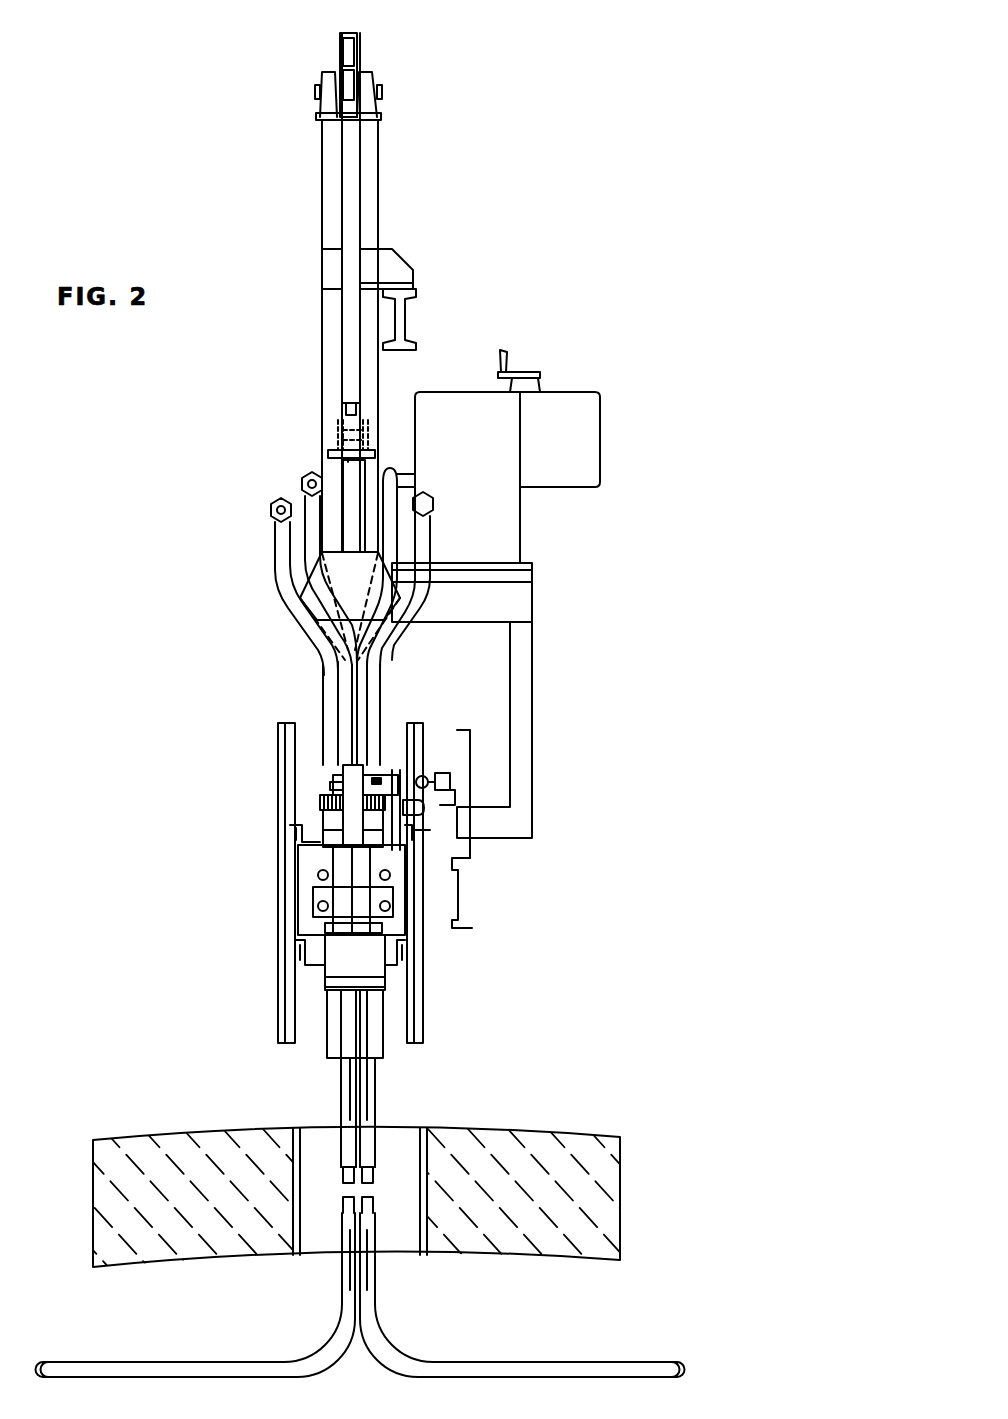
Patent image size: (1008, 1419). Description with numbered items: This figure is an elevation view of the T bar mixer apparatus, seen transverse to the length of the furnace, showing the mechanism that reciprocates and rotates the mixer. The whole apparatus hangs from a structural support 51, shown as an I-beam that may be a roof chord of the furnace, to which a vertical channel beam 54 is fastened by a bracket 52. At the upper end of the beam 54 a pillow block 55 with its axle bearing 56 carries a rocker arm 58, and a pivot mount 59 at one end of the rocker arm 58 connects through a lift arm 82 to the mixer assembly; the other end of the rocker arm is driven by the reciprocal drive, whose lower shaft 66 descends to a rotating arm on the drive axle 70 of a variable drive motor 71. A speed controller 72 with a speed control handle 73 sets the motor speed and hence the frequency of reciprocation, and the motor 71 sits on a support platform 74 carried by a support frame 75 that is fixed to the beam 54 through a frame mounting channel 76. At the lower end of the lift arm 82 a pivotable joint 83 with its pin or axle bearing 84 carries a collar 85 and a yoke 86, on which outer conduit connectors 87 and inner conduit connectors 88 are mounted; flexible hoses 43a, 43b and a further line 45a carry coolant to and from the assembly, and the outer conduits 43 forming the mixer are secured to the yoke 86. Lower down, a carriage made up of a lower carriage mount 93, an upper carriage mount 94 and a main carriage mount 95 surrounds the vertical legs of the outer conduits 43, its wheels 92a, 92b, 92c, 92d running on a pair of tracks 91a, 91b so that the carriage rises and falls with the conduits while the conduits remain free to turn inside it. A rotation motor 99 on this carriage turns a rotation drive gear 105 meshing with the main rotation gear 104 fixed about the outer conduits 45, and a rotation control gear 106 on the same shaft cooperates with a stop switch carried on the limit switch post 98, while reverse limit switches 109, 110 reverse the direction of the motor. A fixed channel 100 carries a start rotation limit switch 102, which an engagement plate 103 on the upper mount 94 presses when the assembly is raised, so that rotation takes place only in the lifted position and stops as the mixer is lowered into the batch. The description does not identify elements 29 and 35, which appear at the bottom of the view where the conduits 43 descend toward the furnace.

The rocker arm 58 is at (357, 40).
The pivot mount 59 is at (357, 55).
The axle bearing 56 is at (377, 88).
The pillow block 55 is at (382, 100).
The lower shaft 66 is at (343, 92).
The vertical channel beam 54 is at (322, 355).
The lift arm 82 is at (378, 185).
The pin or axle bearing 84 is at (345, 420).
The pivotable joint 83 is at (338, 440).
The collar 85 is at (343, 470).
The yoke 86 is at (312, 607).
The bracket 52 is at (413, 262).
The structural support 51 is at (405, 318).
The variable drive motor 71 is at (450, 390).
The speed controller 72 is at (567, 398).
The speed control handle 73 is at (525, 372).
The drive axle 70 is at (400, 470).
The support platform 74 is at (532, 572).
The frame mounting channel 76 is at (532, 612).
The support frame 75 is at (532, 760).
The outer conduit connectors 87 is at (271, 510).
The inner conduit connectors 88 is at (302, 480).
The fitting 45a is at (305, 512).
The hose 43a is at (275, 540).
The hose 43b is at (430, 545).
The rotation control gear 106 is at (370, 765).
The rotation stop limit switch post 98 is at (343, 778).
The reverse limit switch 109 is at (380, 780).
The reverse limit switch 110 is at (395, 785).
The main rotation gear 104 is at (330, 790).
The rotation drive gear 105 is at (320, 805).
The start rotation limit switch 102 is at (450, 781).
The engagement plate 103 is at (424, 812).
The bracket 92c is at (290, 830).
The bracket 92d is at (420, 835).
The upper carriage mount 94 is at (298, 860).
The rotation motor 99 is at (375, 830).
The main carriage mount 95 is at (323, 890).
The structural member or channel 100 is at (472, 924).
The bracket 92a is at (295, 952).
The bracket 92b is at (405, 952).
The lower carriage mount 93 is at (385, 982).
The guide rail 91a is at (278, 1035).
The guide rail 91b is at (423, 1030).
The outer conduits 45 is at (375, 1205).
The slab 29 is at (620, 1168).
The opening 35 is at (405, 1127).
The outer conduits 43 is at (540, 1362).